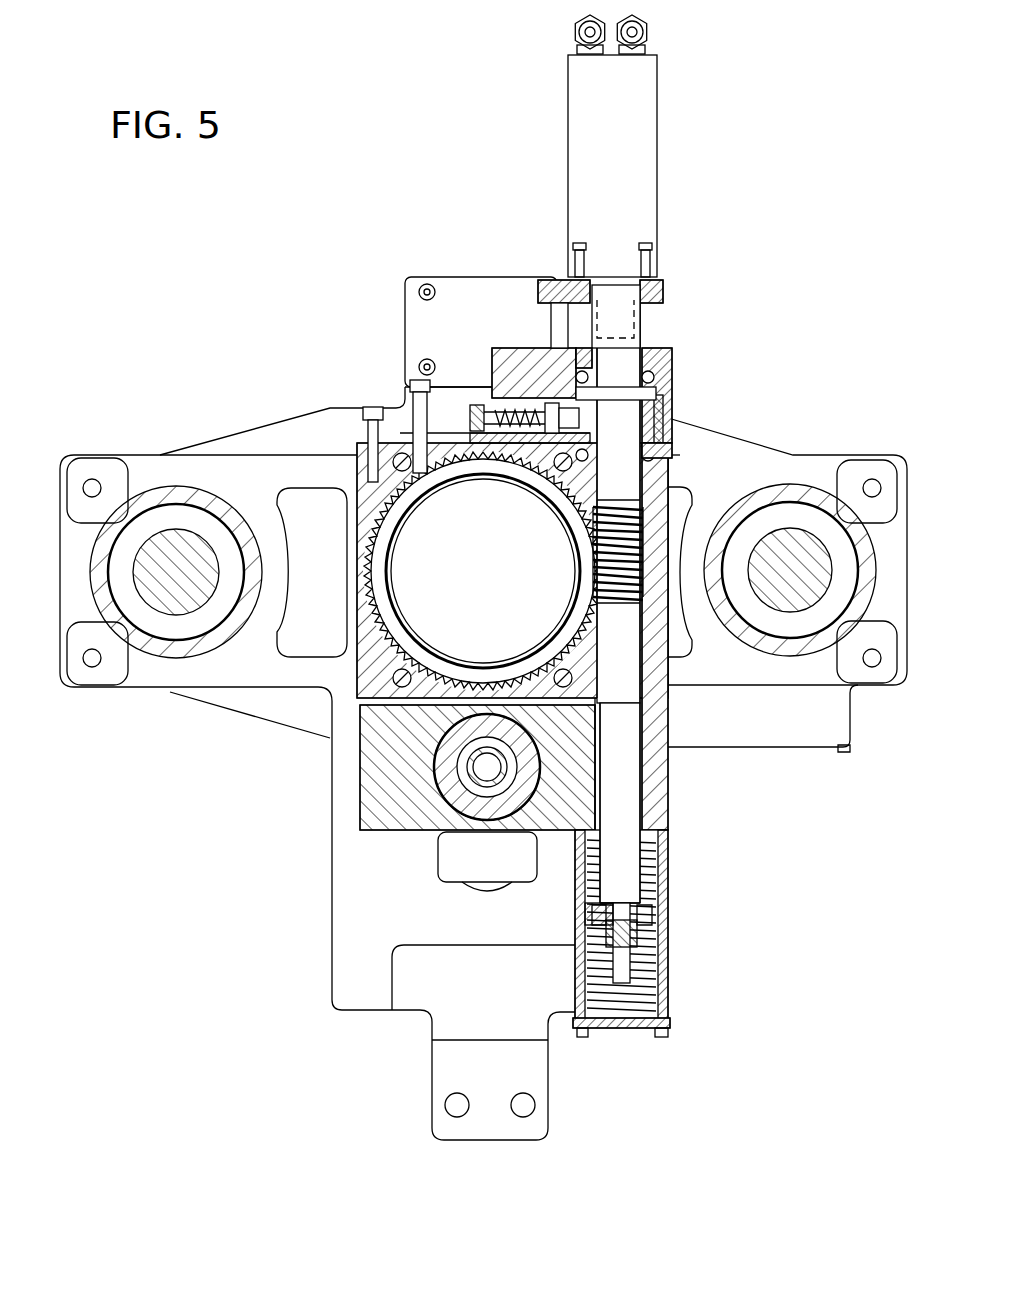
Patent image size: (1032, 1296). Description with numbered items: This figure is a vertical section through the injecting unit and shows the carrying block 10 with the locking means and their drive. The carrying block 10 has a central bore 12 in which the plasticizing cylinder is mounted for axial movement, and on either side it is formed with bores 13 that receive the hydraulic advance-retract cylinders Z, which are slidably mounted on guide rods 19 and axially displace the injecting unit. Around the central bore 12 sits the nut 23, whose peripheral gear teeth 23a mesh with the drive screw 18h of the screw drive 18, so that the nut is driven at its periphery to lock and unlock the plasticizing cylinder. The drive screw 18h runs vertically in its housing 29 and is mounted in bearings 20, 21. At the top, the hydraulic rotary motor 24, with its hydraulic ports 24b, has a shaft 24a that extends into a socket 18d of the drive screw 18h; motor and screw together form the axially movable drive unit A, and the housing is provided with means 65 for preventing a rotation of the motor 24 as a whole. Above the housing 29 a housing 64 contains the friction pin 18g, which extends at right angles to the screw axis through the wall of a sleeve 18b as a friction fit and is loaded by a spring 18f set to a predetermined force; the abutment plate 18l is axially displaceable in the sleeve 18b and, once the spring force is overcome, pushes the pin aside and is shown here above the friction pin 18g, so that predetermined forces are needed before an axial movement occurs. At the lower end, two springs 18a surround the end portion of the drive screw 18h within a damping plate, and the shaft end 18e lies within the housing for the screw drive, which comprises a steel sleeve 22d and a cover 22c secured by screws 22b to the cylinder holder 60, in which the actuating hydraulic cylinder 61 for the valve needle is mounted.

The carrying block 10 is at (232, 683).
The central bore 12 is at (484, 599).
The bores 13 is at (228, 637).
The screw drive 18 is at (650, 819).
The springs 18a is at (660, 940).
The sleeve 18b is at (665, 413).
The socket 18d is at (640, 330).
The shaft collar 18e is at (590, 920).
The spring 18f is at (535, 390).
The friction pin 18g is at (573, 418).
The drive screw 18h is at (625, 755).
The abutment plate 18l is at (665, 395).
The guide rods 19 is at (176, 570).
The bearing 20 is at (665, 372).
The bearing 21 is at (660, 448).
The screws 22b is at (668, 1036).
The cover 22c is at (620, 1032).
The steel sleeve 22d is at (670, 980).
The nut 23 is at (388, 522).
The gear teeth 23a is at (500, 672).
The hydraulic rotary motor 24 is at (620, 170).
The shaft 24a is at (665, 255).
The hydraulic ports 24b is at (636, 32).
The housing 29 is at (360, 703).
The cylinder holder 60 is at (390, 785).
The actuating hydraulic cylinder 61 is at (447, 808).
The housing 64 is at (500, 367).
The means for preventing rotation 65 is at (560, 325).
The drive unit A is at (670, 142).
The hydraulic advance-retract cylinders Z is at (170, 484).